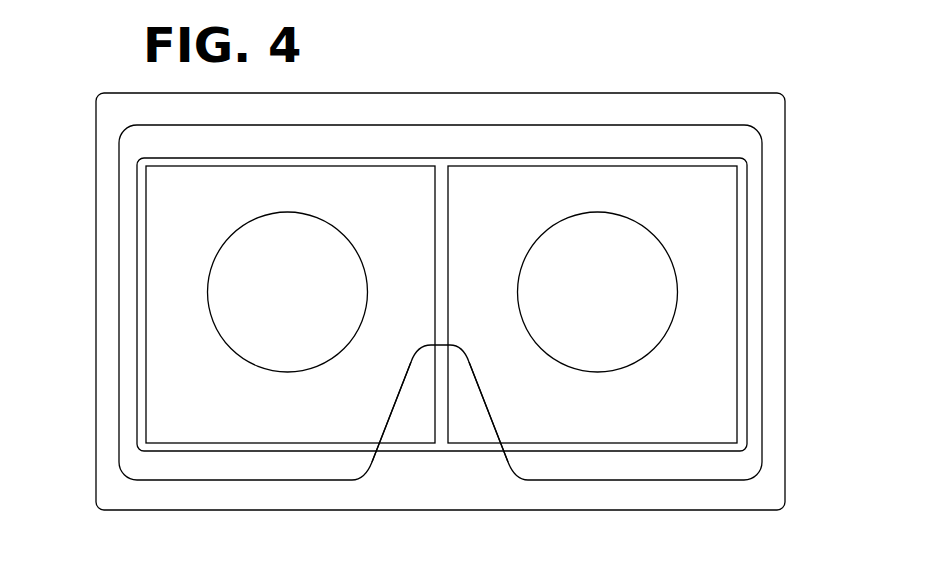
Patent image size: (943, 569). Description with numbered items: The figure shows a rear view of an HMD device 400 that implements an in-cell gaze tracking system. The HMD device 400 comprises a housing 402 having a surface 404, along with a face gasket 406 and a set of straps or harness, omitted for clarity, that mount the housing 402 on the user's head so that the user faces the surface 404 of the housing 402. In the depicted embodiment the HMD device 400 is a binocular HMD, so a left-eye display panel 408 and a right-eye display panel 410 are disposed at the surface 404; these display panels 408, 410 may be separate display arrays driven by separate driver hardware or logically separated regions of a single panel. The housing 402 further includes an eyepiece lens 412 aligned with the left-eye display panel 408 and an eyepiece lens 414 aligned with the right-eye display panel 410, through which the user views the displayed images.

The HMD device 400 is at (473, 295).
The housing 402 is at (786, 271).
The surface 404 is at (158, 499).
The face gasket 406 is at (320, 482).
The left-eye display panel 408 is at (407, 433).
The right-eye display panel 410 is at (477, 433).
The eyepiece lens 412 is at (368, 297).
The eyepiece lens 414 is at (518, 297).